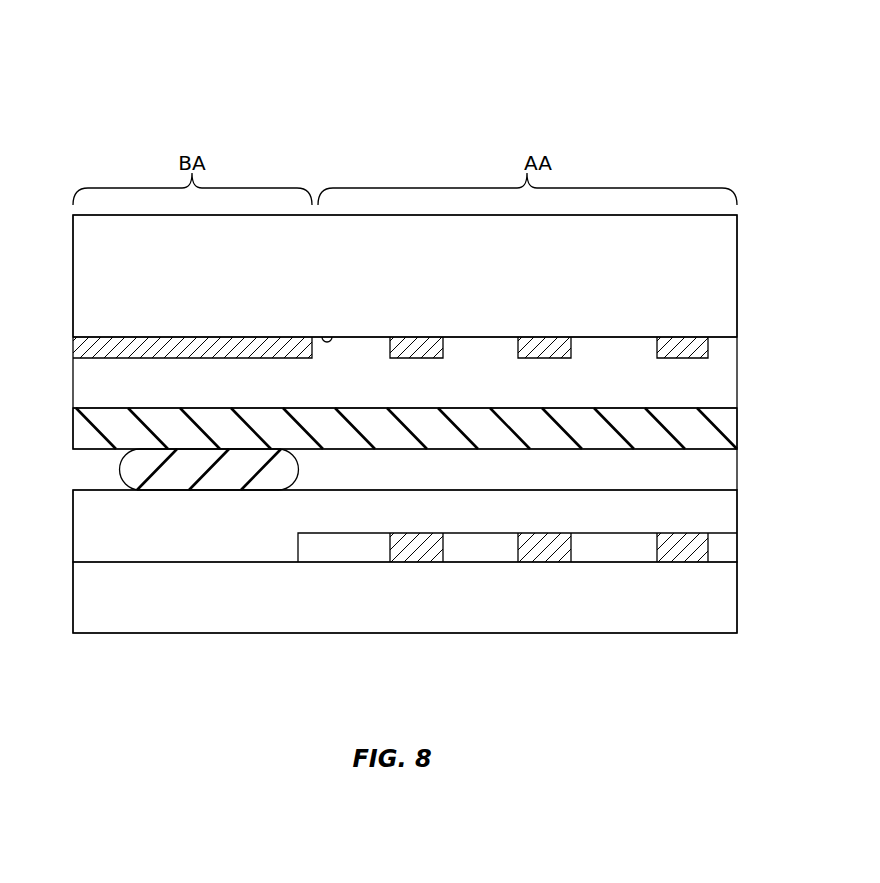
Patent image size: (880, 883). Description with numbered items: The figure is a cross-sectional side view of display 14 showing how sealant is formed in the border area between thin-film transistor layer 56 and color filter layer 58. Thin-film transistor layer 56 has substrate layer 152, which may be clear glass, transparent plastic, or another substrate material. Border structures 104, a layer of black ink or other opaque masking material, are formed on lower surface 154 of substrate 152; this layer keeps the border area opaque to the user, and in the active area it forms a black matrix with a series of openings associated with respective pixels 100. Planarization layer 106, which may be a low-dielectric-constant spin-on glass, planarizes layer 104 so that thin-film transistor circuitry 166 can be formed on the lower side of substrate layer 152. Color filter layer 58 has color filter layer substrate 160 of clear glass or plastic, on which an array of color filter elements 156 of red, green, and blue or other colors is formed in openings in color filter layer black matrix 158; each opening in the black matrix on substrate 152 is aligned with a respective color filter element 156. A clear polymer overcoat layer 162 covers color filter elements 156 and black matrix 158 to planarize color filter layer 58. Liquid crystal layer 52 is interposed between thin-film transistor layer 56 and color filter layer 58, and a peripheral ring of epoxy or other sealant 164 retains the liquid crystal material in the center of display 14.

The display 14 is at (86, 48).
The thin-film transistor layer 56 is at (60, 215).
The color filter layer 58 is at (60, 490).
The substrate layer 152 is at (733, 279).
The planarization layer 106 is at (733, 383).
The border structures 104 is at (199, 346).
The lower surface 154 is at (332, 333).
The pixels 100 is at (362, 324).
The thin-film transistor circuitry 166 is at (733, 429).
The sealant 164 is at (129, 466).
The liquid crystal layer 52 is at (733, 471).
The overcoat layer 162 is at (733, 516).
The color filter layer substrate 160 is at (733, 598).
The color filter elements 156 is at (595, 555).
The color filter layer black matrix 158 is at (433, 554).